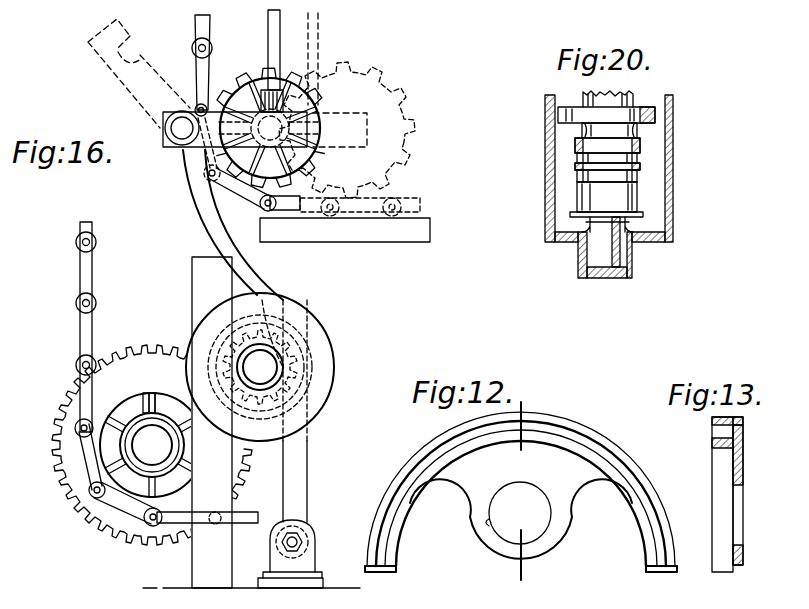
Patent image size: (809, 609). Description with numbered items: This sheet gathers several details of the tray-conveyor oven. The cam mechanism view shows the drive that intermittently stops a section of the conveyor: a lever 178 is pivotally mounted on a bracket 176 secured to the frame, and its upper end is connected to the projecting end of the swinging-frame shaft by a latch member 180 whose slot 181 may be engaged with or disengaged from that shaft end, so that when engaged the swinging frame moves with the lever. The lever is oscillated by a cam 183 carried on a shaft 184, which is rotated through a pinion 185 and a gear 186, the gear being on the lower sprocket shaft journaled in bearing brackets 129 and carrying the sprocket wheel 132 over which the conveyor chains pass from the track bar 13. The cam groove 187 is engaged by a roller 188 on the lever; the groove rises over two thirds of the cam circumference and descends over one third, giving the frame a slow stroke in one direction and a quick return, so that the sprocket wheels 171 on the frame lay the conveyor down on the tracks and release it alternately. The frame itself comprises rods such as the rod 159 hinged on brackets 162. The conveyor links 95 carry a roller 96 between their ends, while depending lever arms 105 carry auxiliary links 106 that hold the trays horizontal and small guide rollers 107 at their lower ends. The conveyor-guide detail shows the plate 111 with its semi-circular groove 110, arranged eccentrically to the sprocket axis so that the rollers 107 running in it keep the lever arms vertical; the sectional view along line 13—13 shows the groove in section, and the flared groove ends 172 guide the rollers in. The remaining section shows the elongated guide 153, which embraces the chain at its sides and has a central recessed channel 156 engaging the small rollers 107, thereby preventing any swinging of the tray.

In FIG. 12, the bar 13 is at (510, 490).
In FIG. 16, the links 95 is at (203, 22).
In FIG. 20, the links 95 is at (580, 145).
In FIG. 16, the roller 96 is at (194, 46).
In FIG. 20, the roller 96 is at (572, 116).
In FIG. 20, the lever arms 105 is at (575, 215).
In FIG. 20, the auxiliary links 106 is at (585, 240).
In FIG. 20, the guide rollers 107 is at (616, 252).
In FIG. 12, the semi-circular groove 110 is at (560, 433).
In FIG. 13, the semi-circular groove 110 is at (740, 430).
In FIG. 12, the plate 111 is at (577, 478).
In FIG. 13, the plate 111 is at (740, 470).
In FIG. 16, the bearing brackets 129 is at (163, 400).
In FIG. 16, the sprocket wheel 132 is at (118, 382).
In FIG. 20, the elongated guide 153 is at (668, 210).
In FIG. 20, the recessed channel 156 is at (636, 266).
In FIG. 16, the rod 159 is at (278, 28).
In FIG. 12, the brackets 162 is at (495, 522).
In FIG. 16, the sprocket wheels 171 is at (302, 77).
In FIG. 12, the foot of segment 172 is at (392, 571).
In FIG. 16, the bracket 176 is at (312, 555).
In FIG. 16, the lever 178 is at (263, 272).
In FIG. 16, the latch member 180 is at (230, 120).
In FIG. 16, the slots 181 is at (193, 17).
In FIG. 16, the cam 183 is at (318, 350).
In FIG. 16, the shaft 184 is at (262, 366).
In FIG. 16, the pinion 185 is at (302, 305).
In FIG. 16, the gear 186 is at (147, 345).
In FIG. 16, the grooves 187 is at (317, 410).
In FIG. 16, the rollers 188 is at (310, 367).